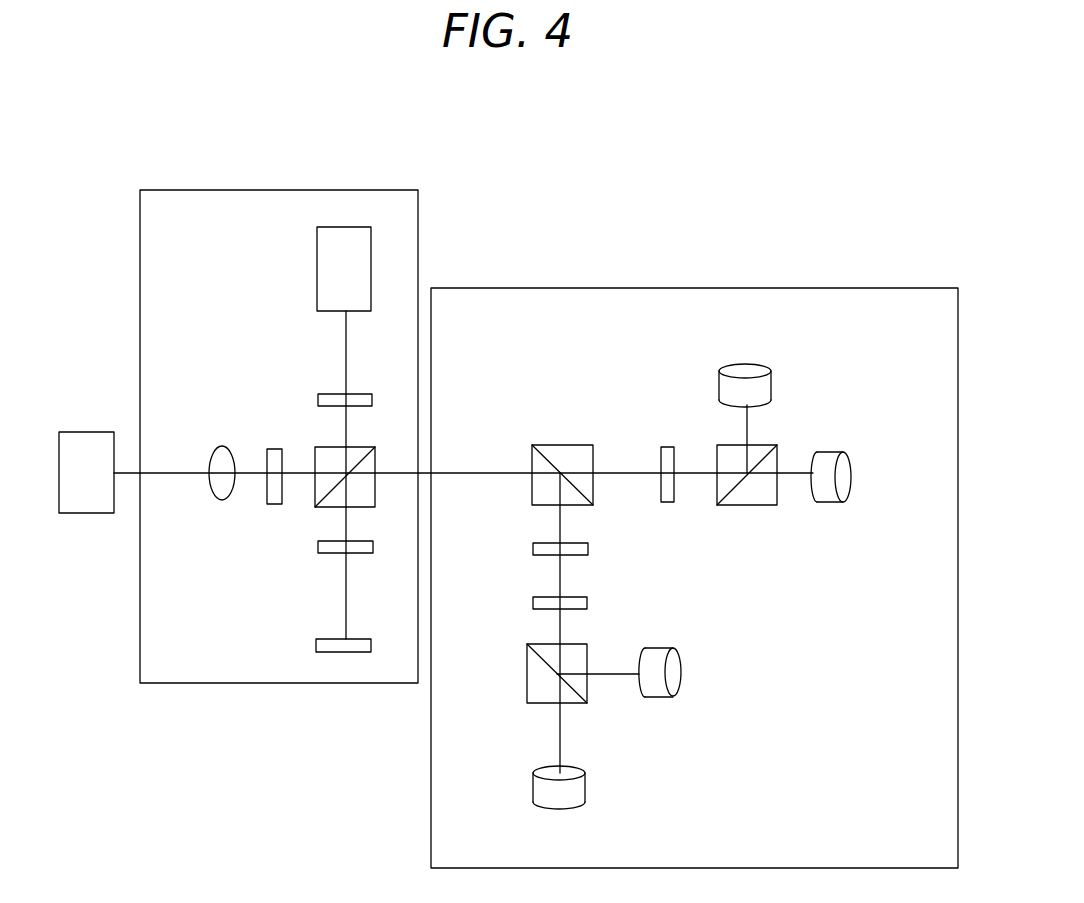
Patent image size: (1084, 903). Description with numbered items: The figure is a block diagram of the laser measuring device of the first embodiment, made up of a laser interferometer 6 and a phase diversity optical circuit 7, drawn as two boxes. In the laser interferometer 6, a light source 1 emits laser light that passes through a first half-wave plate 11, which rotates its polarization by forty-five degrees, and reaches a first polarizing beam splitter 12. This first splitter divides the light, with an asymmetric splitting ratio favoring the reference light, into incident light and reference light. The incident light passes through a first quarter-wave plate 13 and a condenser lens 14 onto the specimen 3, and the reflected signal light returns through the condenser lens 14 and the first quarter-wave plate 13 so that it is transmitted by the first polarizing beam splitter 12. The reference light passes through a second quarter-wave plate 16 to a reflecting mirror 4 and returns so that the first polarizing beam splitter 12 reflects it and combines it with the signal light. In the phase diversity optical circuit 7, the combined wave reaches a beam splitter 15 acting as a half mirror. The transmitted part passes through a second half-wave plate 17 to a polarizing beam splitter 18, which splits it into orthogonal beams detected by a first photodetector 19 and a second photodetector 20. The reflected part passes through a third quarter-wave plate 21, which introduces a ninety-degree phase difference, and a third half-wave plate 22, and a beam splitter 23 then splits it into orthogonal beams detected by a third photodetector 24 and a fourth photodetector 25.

The light source 1 is at (325, 269).
The specimen 3 is at (81, 456).
The reflecting mirror 4 is at (338, 645).
The laser interferometer 6 is at (218, 202).
The phase diversity optical circuit 7 is at (605, 303).
The first λ/2 plate 11 is at (330, 393).
The first polarizing beam splitter 12 is at (327, 457).
The first λ/4 plate 13 is at (276, 459).
The condenser lens 14 is at (222, 459).
The beam splitter 15 is at (567, 457).
The second λ/4 plate 16 is at (320, 548).
The second λ/2 plate 17 is at (667, 457).
The polarizing beam splitter 18 is at (747, 492).
The first photodetector 19 is at (830, 487).
The second photodetector 20 is at (745, 372).
The third λ/4 plate 21 is at (577, 548).
The third λ/2 plate 22 is at (577, 602).
The beam splitter 23 is at (545, 686).
The third photodetector 24 is at (545, 790).
The fourth photodetector 25 is at (675, 675).